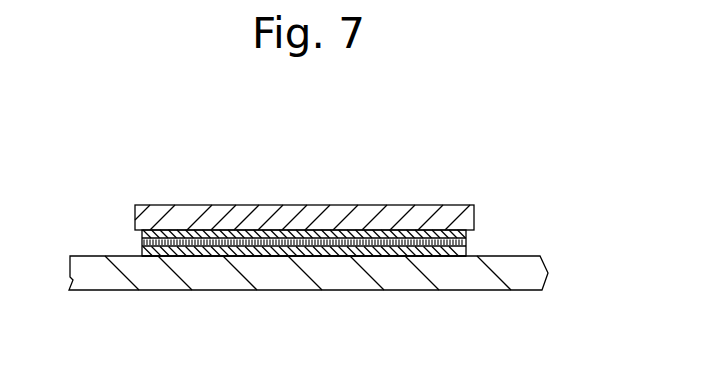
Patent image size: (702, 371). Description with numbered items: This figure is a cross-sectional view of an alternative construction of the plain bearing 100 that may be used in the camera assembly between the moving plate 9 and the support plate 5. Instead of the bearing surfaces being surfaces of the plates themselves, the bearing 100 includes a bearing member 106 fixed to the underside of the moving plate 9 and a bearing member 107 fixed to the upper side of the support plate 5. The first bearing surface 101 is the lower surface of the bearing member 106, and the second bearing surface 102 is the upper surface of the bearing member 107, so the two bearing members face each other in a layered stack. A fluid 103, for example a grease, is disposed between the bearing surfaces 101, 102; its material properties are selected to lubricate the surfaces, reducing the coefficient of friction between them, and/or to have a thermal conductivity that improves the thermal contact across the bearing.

The support plate 5 is at (483, 275).
The moving plate 9 is at (455, 213).
The plain bearing 100 is at (203, 222).
The first bearing surface 101 is at (263, 238).
The second bearing surface 102 is at (400, 250).
The fluid 103 is at (327, 243).
The bearing member 106 is at (352, 238).
The bearing member 107 is at (222, 257).